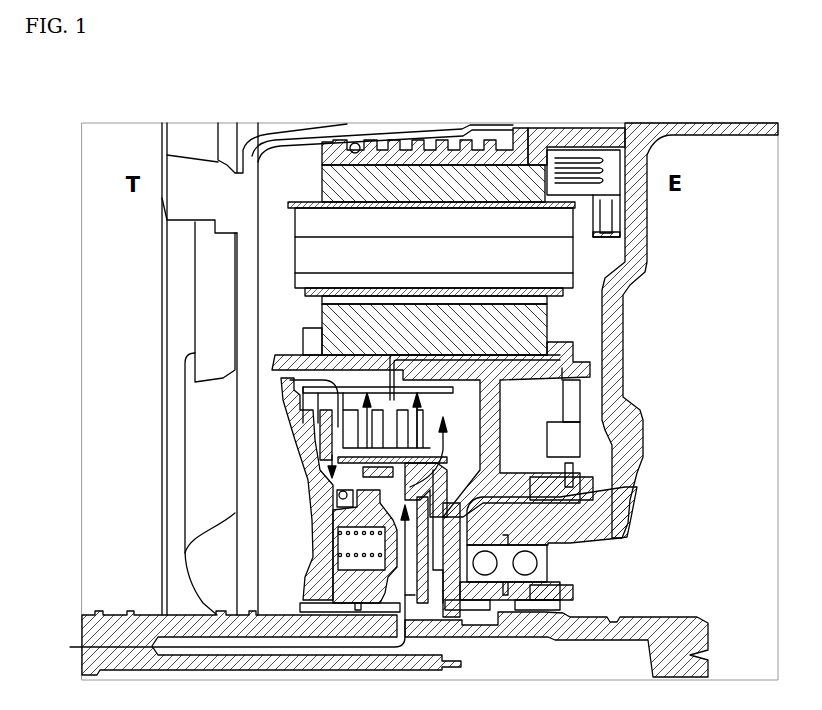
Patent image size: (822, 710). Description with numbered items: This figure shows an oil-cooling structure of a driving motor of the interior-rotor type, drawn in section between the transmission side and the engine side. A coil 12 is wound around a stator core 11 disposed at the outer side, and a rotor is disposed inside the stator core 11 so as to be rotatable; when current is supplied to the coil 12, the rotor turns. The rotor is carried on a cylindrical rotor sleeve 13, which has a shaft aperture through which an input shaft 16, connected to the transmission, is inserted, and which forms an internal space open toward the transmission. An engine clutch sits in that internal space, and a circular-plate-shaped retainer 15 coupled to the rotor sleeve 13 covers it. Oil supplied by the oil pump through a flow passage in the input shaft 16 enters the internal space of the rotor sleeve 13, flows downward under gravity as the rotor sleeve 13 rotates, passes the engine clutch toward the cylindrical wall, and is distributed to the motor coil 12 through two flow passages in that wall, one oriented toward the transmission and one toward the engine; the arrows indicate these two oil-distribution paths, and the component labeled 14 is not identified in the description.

The stator core 11 is at (333, 187).
The coil 12 is at (563, 253).
The rotor sleeve 13 is at (520, 373).
The clutch 14 is at (352, 428).
The retainer 15 is at (295, 440).
The input shaft 16 is at (128, 628).